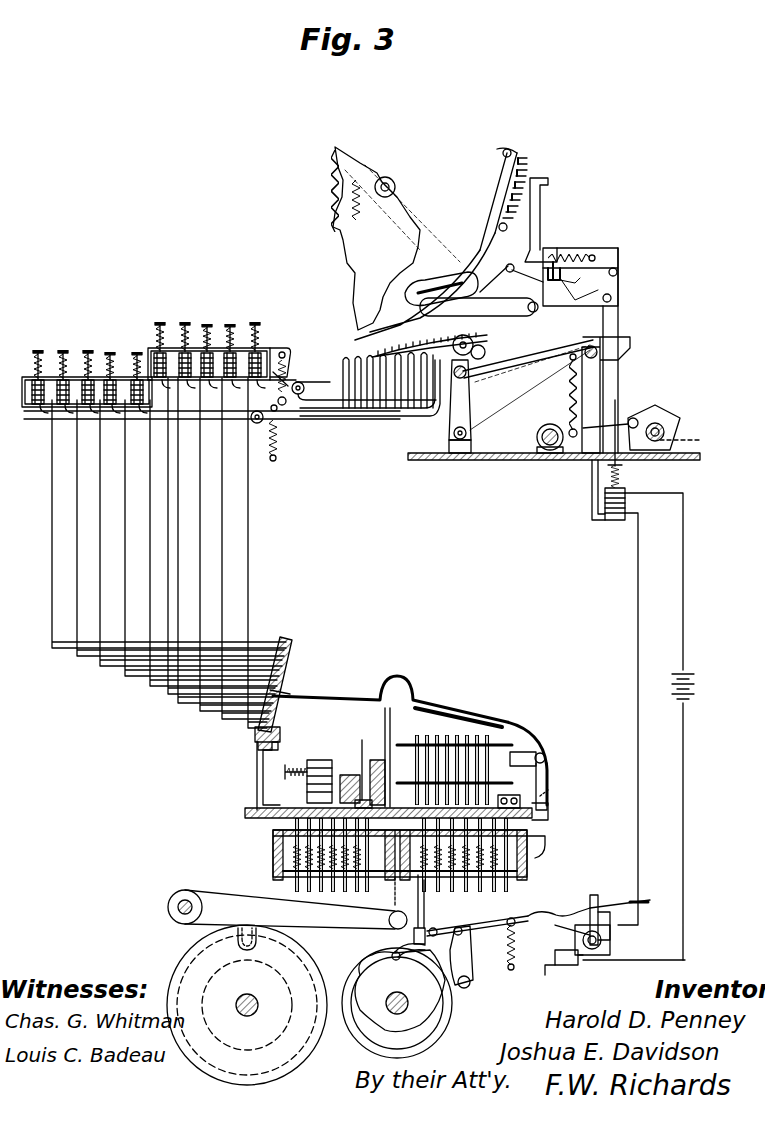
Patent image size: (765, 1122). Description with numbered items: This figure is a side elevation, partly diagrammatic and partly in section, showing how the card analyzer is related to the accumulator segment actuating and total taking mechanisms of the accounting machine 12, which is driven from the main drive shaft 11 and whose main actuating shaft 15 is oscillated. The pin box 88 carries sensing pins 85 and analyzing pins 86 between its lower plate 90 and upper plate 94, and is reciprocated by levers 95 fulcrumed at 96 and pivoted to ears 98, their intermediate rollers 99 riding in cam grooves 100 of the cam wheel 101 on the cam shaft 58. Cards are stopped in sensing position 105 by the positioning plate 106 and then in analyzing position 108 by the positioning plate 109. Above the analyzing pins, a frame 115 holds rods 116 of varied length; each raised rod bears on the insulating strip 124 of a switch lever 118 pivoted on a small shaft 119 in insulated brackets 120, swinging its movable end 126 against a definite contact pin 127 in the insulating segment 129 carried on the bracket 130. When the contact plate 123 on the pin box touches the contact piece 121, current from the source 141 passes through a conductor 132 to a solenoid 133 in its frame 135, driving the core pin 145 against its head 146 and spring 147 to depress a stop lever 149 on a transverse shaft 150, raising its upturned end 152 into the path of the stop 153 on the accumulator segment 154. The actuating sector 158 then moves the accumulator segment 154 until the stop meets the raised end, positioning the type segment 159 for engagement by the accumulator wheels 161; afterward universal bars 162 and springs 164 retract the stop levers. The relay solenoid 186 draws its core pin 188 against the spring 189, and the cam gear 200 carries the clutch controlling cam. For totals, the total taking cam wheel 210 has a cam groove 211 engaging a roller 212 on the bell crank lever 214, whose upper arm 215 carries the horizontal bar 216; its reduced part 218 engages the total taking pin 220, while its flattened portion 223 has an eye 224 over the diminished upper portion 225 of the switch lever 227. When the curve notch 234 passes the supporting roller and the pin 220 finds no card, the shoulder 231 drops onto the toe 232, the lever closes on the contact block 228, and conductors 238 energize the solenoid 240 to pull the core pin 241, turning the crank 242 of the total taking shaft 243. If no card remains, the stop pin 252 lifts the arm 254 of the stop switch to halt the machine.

The main drive shaft 11 is at (397, 1014).
The accounting machine 12 is at (558, 217).
The main actuating shaft 15 is at (548, 450).
The cam shaft 58 is at (247, 994).
The sensing pins 85 is at (295, 885).
The analyzing pins 86 is at (506, 890).
The pin box 88 is at (517, 871).
The lower plate of the pin box 90 is at (380, 890).
The upper plate of the pin box 94 is at (280, 818).
The levers 95 is at (232, 900).
The fulcrum 96 is at (178, 914).
The ears 98 is at (410, 930).
The intermediate rollers 99 is at (258, 946).
The cam grooves 100 is at (255, 1048).
The cam wheel 101 is at (300, 1065).
The sensing position 105 is at (245, 813).
The positioning plate 106 is at (358, 770).
The analyzing position 108 is at (527, 845).
The positioning plate 109 is at (548, 815).
The frame 115 is at (530, 752).
The vertically movable rods 116 is at (518, 712).
The switch lever 118 is at (492, 735).
The small shaft 119 is at (548, 760).
The insulated brackets 120 is at (546, 755).
The circuit closing contact piece 121 is at (548, 778).
The circuit closing contact plate 123 is at (548, 800).
The insulating strip 124 is at (445, 715).
The movable ends 126 is at (277, 690).
The contact pins 127 is at (282, 672).
The segment 129 is at (256, 735).
The bracket 130 is at (256, 772).
The conductors 132 is at (250, 616).
The solenoids 133 is at (58, 377).
The frames 135 is at (283, 348).
The source of current 141 is at (700, 690).
The core pin 145 is at (125, 378).
The head 146 is at (95, 380).
The spring 147 is at (88, 350).
The stop lever 149 is at (288, 380).
The transverse shafts 150 is at (304, 391).
The upturned end 152 is at (400, 410).
The stop 153 is at (390, 305).
The accumulator segment 154 is at (358, 293).
The actuating sector 158 is at (612, 395).
The type segment 159 is at (480, 260).
The accumulator wheels 161 is at (487, 368).
The universal bars 162 is at (286, 404).
The springs 164 is at (292, 352).
The relay solenoid 186 is at (318, 760).
The core pin 188 is at (295, 776).
The spring 189 is at (292, 766).
The cam gear 200 is at (392, 722).
The total taking cam wheel 210 is at (452, 1030).
The cam groove 211 is at (418, 1045).
The roller 212 is at (390, 954).
The bell crank lever 214 is at (410, 955).
The upper arm 215 is at (470, 958).
The horizontal bar 216 is at (473, 929).
The reduced part 218 is at (436, 928).
The total taking pin 220 is at (424, 905).
The flattened portion 223 is at (578, 912).
The eye 224 is at (610, 912).
The diminished upper portion 225 is at (596, 895).
The switch lever 227 is at (562, 933).
The contact block 228 is at (548, 968).
The shoulder 231 is at (640, 906).
The toe 232 is at (612, 934).
The curve notch 234 is at (528, 918).
The conductors 238 is at (638, 598).
The solenoid 240 is at (626, 504).
The core pin 241 is at (622, 478).
The crank 242 is at (660, 405).
The total taking shaft 243 is at (668, 436).
The stop pin 252 is at (520, 880).
The arm 254 is at (512, 795).